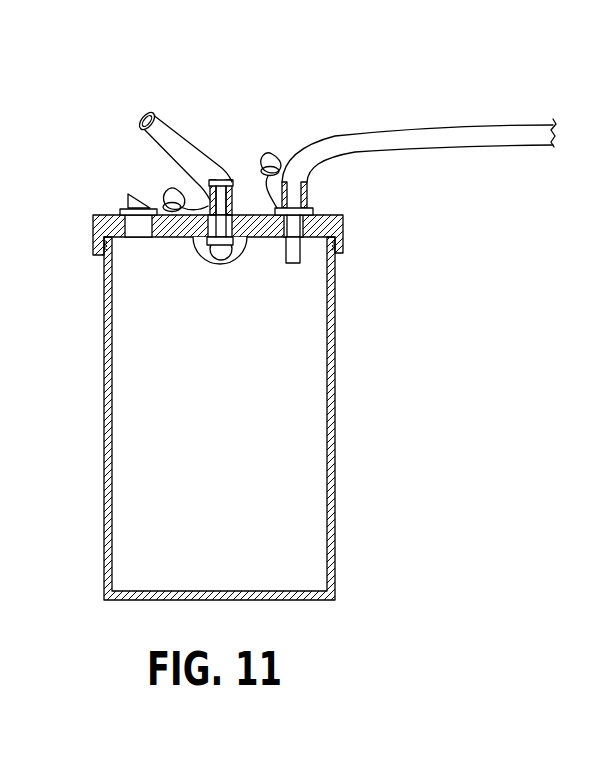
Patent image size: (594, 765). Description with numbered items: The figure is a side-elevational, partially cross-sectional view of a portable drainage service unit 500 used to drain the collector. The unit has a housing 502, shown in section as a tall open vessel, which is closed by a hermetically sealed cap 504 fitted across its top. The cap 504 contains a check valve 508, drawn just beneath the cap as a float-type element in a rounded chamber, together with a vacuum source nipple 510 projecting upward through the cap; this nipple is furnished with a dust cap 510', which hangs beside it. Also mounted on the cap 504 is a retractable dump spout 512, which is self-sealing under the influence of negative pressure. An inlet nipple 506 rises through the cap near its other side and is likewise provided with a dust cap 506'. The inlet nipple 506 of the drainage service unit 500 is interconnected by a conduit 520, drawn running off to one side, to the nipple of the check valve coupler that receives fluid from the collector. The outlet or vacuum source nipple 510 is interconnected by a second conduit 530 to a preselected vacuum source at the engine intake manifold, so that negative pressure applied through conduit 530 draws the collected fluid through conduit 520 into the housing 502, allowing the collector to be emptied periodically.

The portable drainage service unit 500 is at (346, 389).
The housing 502 is at (335, 475).
The hermetically sealed cap 504 is at (343, 223).
The inlet nipple 506 is at (342, 216).
The dust cap 506' is at (282, 138).
The check valve 508 is at (218, 253).
The vacuum source nipple 510 is at (130, 164).
The dust cap 510' is at (115, 172).
The retractable dump spout 512 is at (127, 205).
The conduit 520 is at (437, 122).
The conduit 530 is at (191, 137).